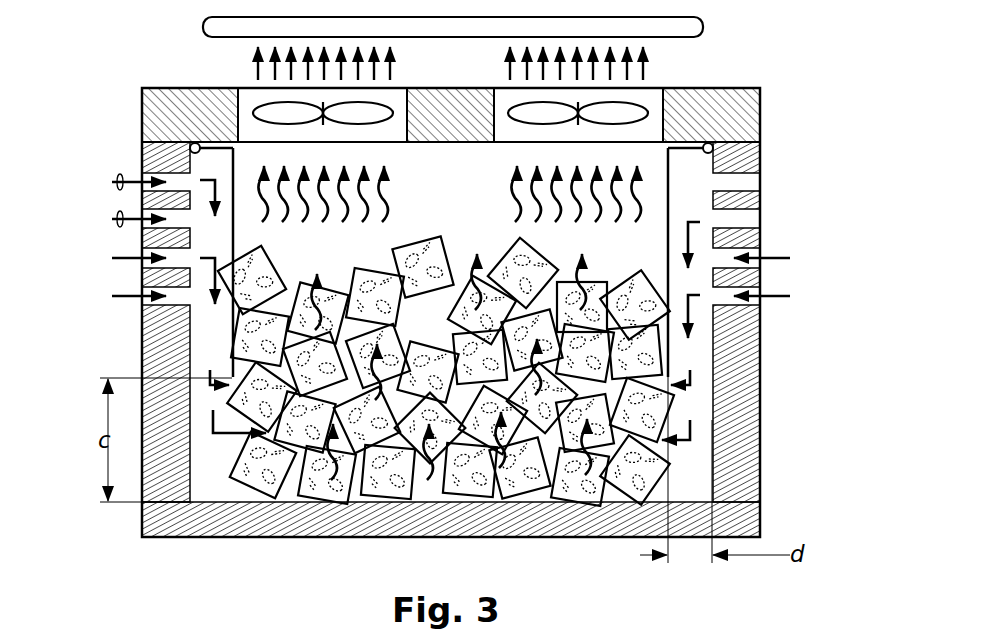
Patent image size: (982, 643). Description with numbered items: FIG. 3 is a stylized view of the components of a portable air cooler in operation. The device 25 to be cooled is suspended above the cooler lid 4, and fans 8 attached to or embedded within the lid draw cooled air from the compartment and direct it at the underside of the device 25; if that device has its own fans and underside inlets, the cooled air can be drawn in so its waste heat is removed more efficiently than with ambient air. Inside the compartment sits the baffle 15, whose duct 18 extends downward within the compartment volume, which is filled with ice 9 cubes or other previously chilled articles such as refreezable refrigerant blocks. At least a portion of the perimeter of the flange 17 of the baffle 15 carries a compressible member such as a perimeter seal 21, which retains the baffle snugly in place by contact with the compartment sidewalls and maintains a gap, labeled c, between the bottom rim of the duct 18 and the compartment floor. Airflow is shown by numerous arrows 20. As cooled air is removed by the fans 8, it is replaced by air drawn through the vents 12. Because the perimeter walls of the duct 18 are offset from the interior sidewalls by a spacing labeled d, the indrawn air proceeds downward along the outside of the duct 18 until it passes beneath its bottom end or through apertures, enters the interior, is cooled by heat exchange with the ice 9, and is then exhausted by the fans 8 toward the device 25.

The cooler lid 4 is at (760, 88).
The fans 8 is at (682, 146).
The ice 9 is at (342, 486).
The vents 12 is at (750, 222).
The baffle 15 is at (633, 105).
The flange 17 is at (219, 150).
The duct 18 is at (232, 345).
The arrows 20 is at (119, 212).
The perimeter seal 21 is at (190, 145).
The device to be cooled 25 is at (203, 27).